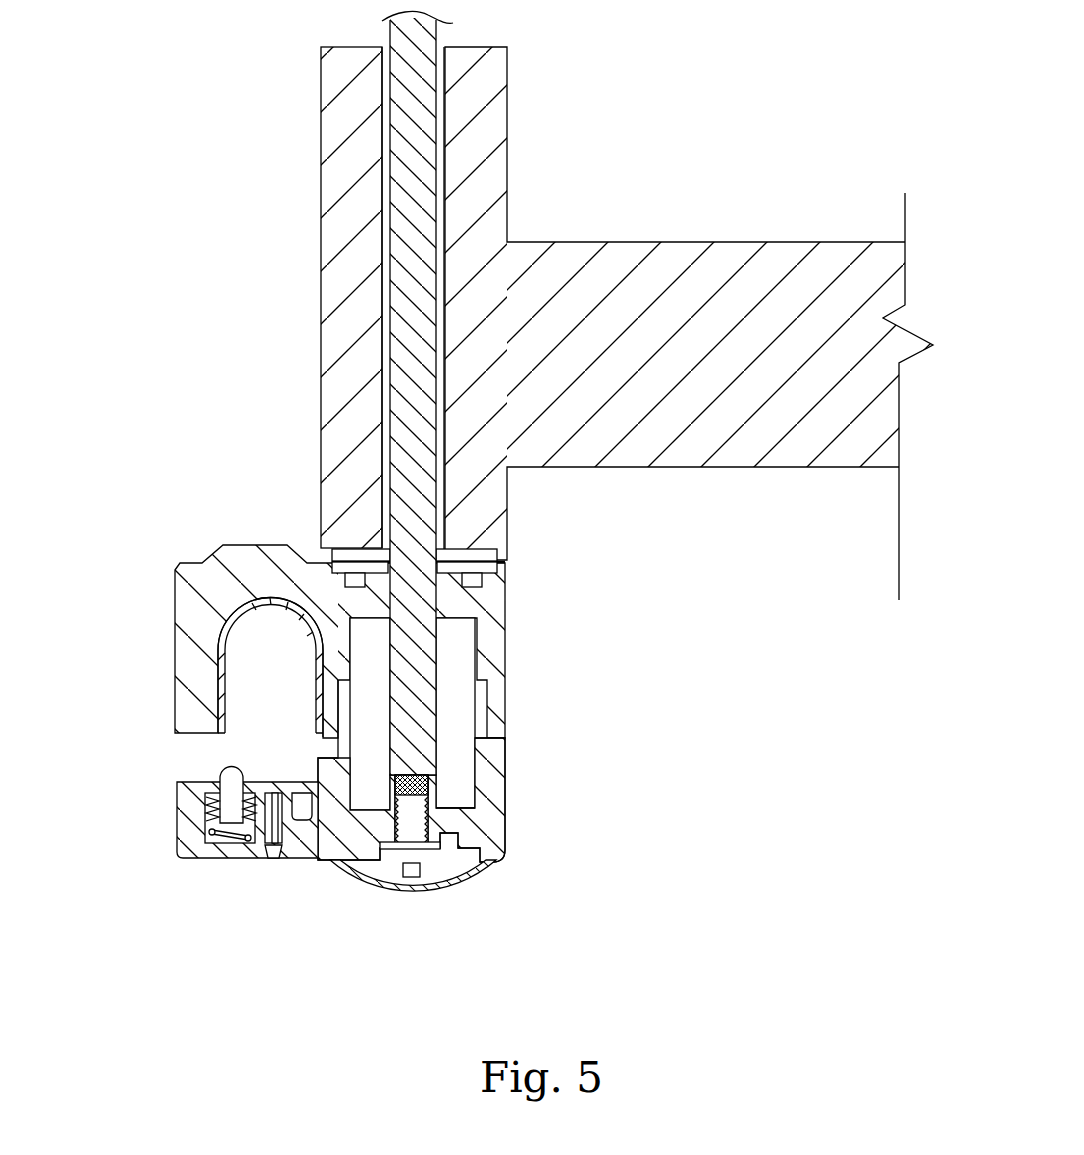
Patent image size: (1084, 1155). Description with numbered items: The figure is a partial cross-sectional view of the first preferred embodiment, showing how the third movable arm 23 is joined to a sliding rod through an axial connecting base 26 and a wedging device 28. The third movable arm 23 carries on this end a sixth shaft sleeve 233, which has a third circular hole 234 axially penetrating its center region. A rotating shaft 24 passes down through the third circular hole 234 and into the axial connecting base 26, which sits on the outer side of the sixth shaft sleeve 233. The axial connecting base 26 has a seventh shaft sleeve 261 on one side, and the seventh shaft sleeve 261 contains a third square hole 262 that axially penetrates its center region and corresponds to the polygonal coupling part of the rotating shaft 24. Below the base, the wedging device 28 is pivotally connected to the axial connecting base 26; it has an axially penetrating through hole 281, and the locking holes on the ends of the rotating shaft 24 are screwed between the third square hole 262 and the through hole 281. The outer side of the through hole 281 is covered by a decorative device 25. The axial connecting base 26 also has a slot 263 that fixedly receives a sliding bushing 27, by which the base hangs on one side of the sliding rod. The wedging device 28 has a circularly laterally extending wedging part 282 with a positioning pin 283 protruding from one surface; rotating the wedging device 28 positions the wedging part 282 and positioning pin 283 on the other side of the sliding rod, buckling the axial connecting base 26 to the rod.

The third movable arm 23 is at (590, 243).
The sixth shaft sleeve 233 is at (332, 270).
The third circular hole 234 is at (440, 130).
The rotating shaft 24 is at (405, 247).
The decorative device 25 is at (457, 885).
The axial connecting base 26 is at (363, 677).
The seventh shaft sleeve 261 is at (498, 587).
The third square hole 262 is at (503, 557).
The slot 263 is at (193, 601).
The sliding bushing 27 is at (220, 690).
The wedging device 28 is at (508, 828).
The through hole 281 is at (395, 845).
The wedging part 282 is at (178, 820).
The positioning pin 283 is at (228, 782).